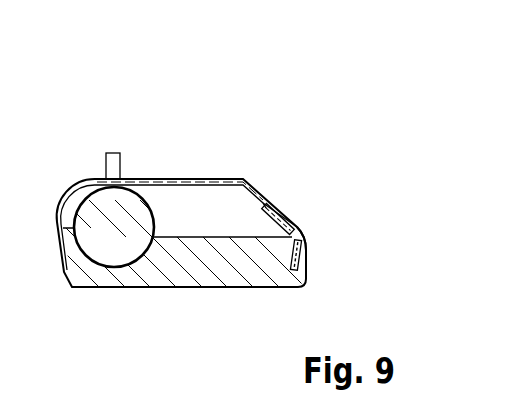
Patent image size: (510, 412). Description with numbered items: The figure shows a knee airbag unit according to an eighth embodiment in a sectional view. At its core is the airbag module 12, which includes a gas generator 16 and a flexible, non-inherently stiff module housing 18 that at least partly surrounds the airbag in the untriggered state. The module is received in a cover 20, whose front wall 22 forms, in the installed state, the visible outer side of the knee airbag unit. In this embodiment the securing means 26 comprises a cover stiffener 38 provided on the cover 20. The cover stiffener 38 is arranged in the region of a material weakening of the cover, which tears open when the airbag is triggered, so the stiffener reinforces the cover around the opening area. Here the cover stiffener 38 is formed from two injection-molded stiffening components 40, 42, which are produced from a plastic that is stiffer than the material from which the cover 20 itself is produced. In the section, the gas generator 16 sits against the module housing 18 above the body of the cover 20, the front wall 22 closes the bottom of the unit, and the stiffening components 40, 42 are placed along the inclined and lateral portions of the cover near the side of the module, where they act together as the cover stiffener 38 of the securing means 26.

The airbag module 12 is at (234, 147).
The gas generator 16 is at (98, 210).
The module housing 18 is at (167, 182).
The cover 20 is at (147, 277).
The front wall 22 is at (223, 300).
The securing means 26 is at (320, 223).
The cover stiffener 38 is at (305, 192).
The stiffening component 40 is at (284, 198).
The stiffening component 42 is at (318, 256).